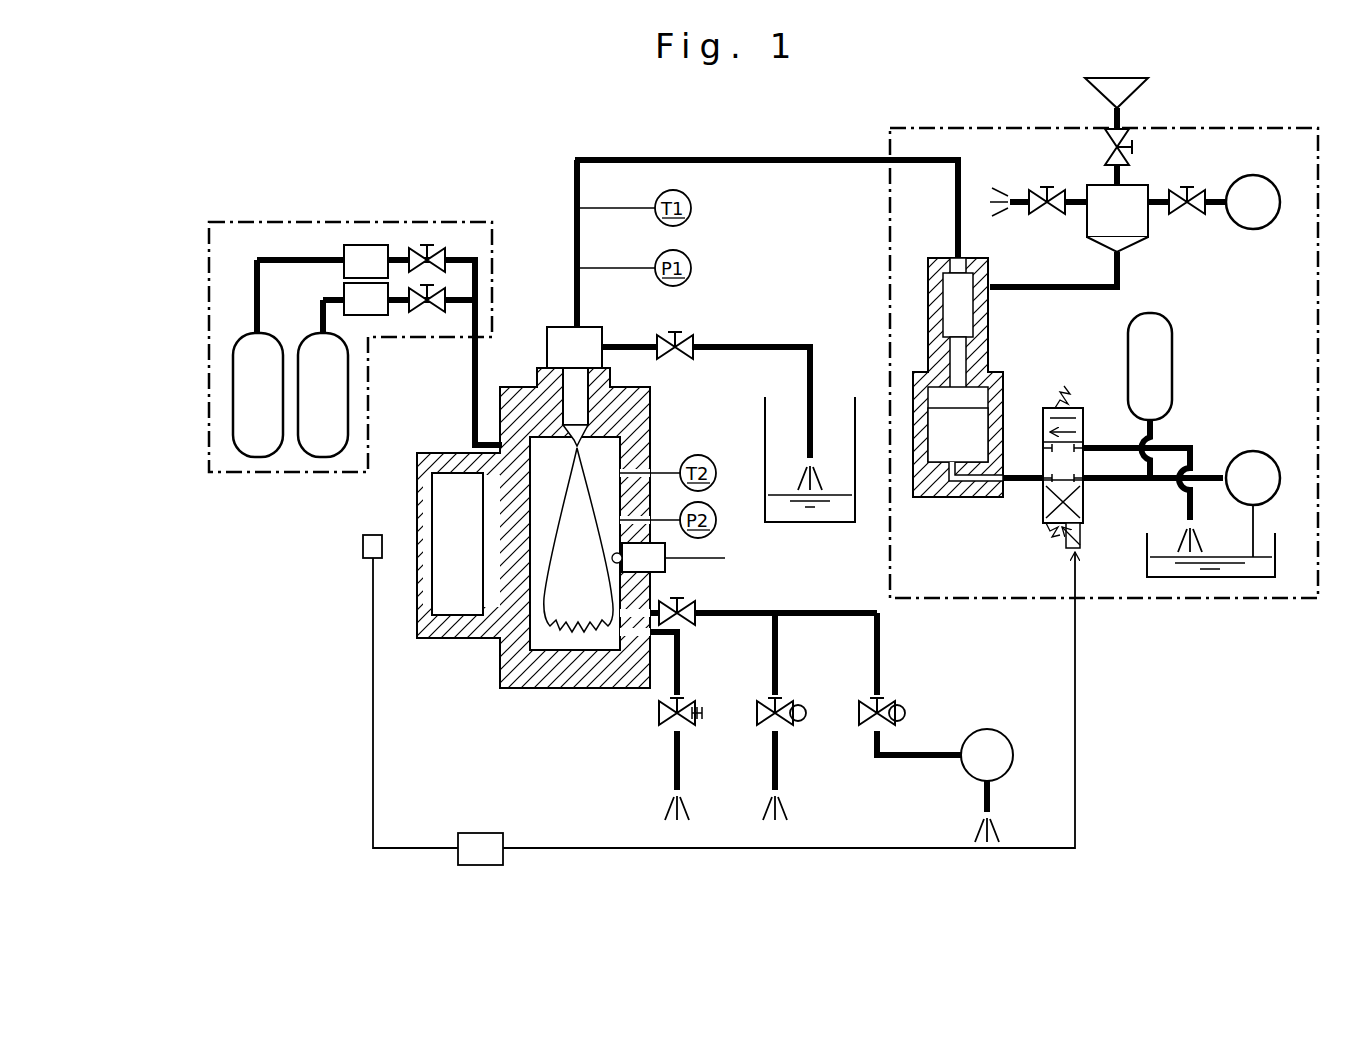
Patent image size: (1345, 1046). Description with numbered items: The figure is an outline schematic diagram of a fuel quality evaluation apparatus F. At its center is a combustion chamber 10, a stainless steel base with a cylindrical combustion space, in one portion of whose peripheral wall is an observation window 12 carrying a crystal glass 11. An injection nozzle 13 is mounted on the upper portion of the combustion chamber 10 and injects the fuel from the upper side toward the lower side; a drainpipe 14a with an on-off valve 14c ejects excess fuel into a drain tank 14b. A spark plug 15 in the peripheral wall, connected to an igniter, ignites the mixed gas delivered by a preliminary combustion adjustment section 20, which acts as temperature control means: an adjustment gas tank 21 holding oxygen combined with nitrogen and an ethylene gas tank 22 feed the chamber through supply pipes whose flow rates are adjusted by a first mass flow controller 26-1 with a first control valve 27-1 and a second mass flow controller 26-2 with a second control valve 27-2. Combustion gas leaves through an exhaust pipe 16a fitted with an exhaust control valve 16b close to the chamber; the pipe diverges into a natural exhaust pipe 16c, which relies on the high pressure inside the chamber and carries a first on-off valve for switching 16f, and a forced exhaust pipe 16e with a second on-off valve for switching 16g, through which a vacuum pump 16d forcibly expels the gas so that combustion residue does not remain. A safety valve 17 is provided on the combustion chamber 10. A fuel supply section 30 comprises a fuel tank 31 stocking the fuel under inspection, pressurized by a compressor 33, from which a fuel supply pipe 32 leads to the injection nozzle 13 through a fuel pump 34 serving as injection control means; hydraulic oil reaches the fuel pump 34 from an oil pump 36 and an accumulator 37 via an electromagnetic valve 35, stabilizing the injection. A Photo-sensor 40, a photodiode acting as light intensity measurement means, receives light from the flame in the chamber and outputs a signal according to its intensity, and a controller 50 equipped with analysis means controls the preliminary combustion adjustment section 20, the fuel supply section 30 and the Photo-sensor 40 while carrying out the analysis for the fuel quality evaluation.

The combustion chamber 10 is at (566, 686).
The crystal glass 11 is at (465, 585).
The observation window 12 is at (416, 622).
The injection nozzle 13 is at (574, 395).
The drainpipe 14a is at (730, 347).
The drain tank 14b is at (829, 398).
The on-off valve 14c is at (683, 340).
The spark plug 15 is at (665, 553).
The exhaust pipe 16a is at (735, 613).
The exhaust control valve 16b is at (683, 600).
The natural exhaust pipe 16c is at (780, 640).
The vacuum pump 16d is at (1005, 738).
The forced exhaust pipe 16e is at (882, 640).
The first on-off valve for switching 16f is at (800, 727).
The second on-off valve for switching 16g is at (908, 712).
The safety valve 17 is at (692, 730).
The preliminary combustion adjustment section 20 is at (232, 222).
The adjustment gas tank 21 is at (271, 407).
The ethylene gas tank 22 is at (336, 407).
The first mass flow controller 26-1 is at (350, 245).
The second mass flow controller 26-2 is at (344, 292).
The first control valve 27-1 is at (422, 243).
The second control valve 27-2 is at (426, 316).
The fuel supply section 30 is at (1222, 128).
The fuel tank 31 is at (1150, 190).
The fuel supply pipe 32 is at (1125, 280).
The compressor 33 is at (1266, 214).
The fuel pump 34 is at (995, 368).
The electromagnetic valve 35 is at (1036, 507).
The oil pump 36 is at (1266, 490).
The accumulator 37 is at (1163, 382).
The Photo-sensor 40 is at (363, 546).
The controller 50 is at (505, 866).
The fuel quality evaluation apparatus F is at (346, 136).